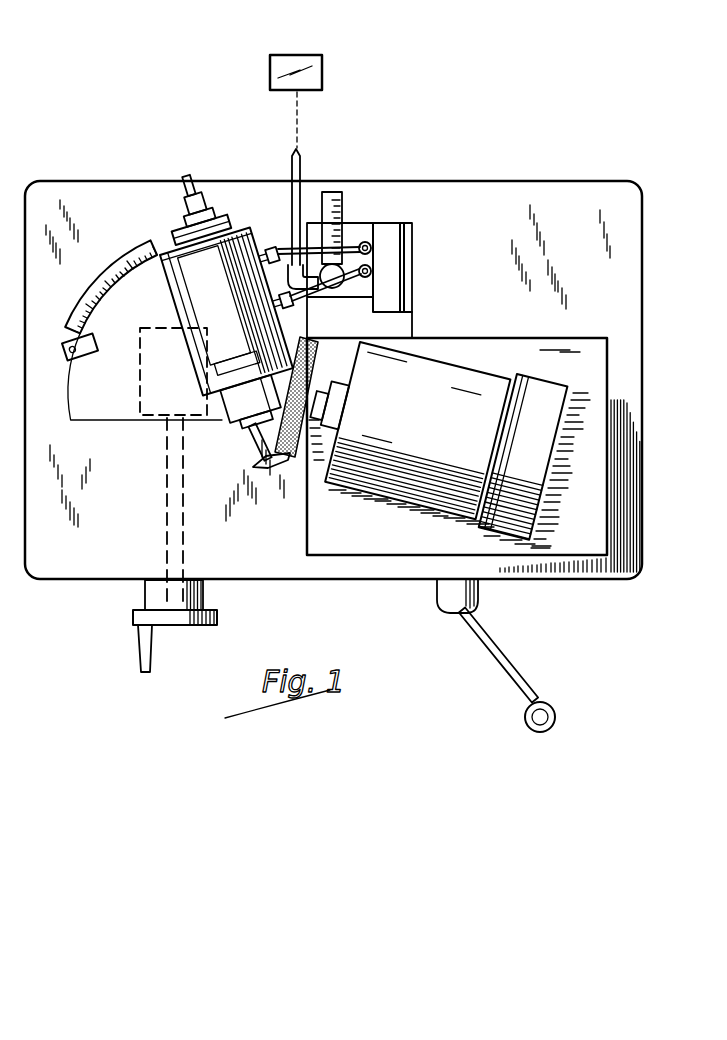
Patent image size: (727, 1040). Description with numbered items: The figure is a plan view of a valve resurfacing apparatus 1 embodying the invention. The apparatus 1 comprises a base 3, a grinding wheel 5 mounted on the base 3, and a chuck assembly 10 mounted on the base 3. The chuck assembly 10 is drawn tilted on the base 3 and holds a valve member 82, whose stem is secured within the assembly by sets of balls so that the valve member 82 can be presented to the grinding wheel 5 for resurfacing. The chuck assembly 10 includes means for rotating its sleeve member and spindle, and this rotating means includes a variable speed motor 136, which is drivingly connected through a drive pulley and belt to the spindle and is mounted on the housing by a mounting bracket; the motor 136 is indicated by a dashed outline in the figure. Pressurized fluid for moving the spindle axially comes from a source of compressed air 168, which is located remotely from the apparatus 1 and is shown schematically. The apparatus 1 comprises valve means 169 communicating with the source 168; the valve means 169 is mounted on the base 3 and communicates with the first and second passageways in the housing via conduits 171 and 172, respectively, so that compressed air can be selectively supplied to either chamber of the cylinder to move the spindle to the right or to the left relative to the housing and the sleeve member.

The valve resurfacing apparatus 1 is at (471, 120).
The base 3 is at (567, 190).
The grinding wheel 5 is at (372, 501).
The chuck assembly 10 is at (168, 298).
The valve member 82 is at (254, 441).
The variable speed motor 136 is at (217, 313).
The source of compressed air 168 is at (298, 57).
The valve means 169 is at (398, 247).
The conduit 171 is at (359, 245).
The conduit 172 is at (360, 287).